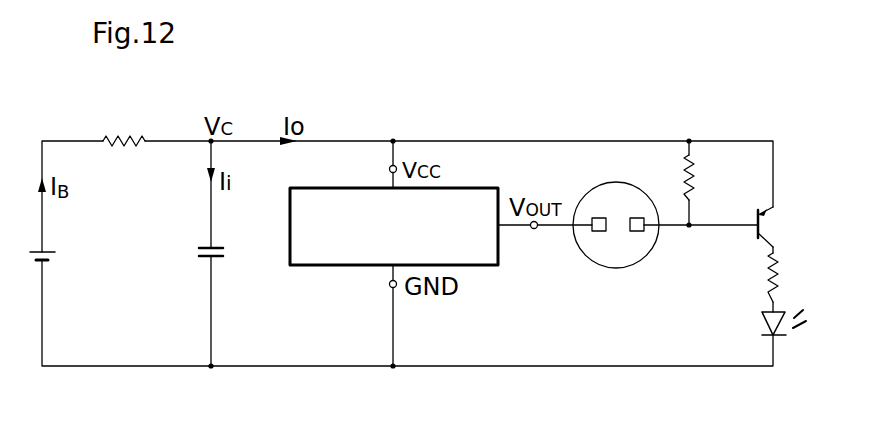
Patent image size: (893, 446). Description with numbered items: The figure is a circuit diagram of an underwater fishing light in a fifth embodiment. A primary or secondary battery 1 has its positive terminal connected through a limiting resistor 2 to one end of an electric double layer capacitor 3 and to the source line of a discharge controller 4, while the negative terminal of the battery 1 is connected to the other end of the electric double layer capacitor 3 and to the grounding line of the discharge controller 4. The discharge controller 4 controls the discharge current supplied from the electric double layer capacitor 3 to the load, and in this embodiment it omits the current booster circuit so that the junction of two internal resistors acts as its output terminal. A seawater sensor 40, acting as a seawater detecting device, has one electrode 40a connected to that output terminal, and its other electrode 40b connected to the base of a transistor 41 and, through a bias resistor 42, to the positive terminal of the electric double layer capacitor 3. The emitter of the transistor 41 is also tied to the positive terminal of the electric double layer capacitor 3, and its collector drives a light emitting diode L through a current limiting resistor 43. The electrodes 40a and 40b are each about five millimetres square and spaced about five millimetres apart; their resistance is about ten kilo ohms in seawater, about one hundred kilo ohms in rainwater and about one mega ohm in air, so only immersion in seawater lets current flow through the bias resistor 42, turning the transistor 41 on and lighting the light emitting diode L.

The battery 1 is at (49, 243).
The limiting resistor 2 is at (143, 139).
The electric double layer capacitor 3 is at (218, 245).
The discharge controller 4 is at (327, 268).
The seawater sensor 40 is at (608, 181).
The electrode 40a is at (599, 231).
The electrode 40b is at (637, 231).
The transistor 41 is at (775, 212).
The bias resistor 42 is at (700, 171).
The current limiting resistor 43 is at (781, 268).
The light emitting diode L is at (762, 317).